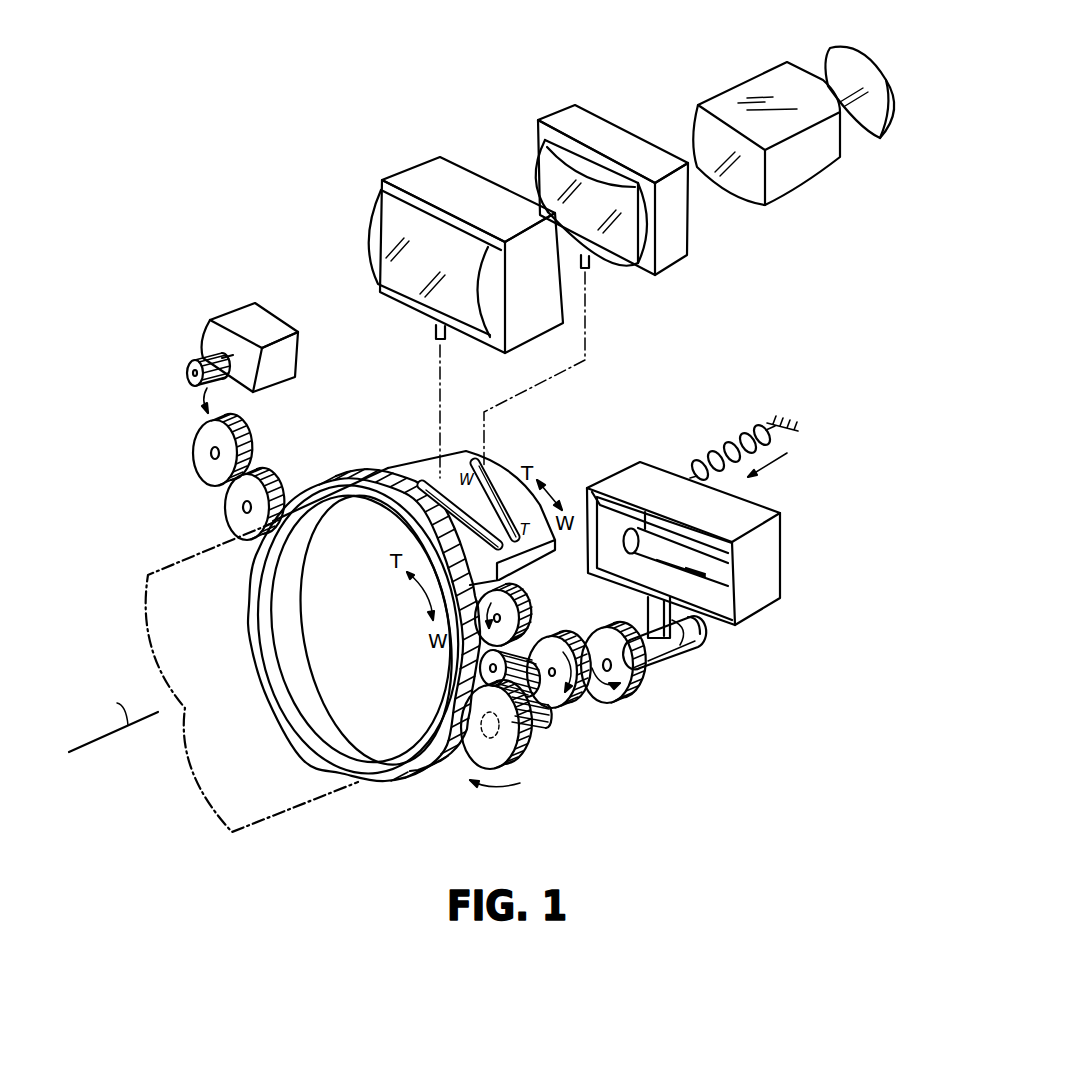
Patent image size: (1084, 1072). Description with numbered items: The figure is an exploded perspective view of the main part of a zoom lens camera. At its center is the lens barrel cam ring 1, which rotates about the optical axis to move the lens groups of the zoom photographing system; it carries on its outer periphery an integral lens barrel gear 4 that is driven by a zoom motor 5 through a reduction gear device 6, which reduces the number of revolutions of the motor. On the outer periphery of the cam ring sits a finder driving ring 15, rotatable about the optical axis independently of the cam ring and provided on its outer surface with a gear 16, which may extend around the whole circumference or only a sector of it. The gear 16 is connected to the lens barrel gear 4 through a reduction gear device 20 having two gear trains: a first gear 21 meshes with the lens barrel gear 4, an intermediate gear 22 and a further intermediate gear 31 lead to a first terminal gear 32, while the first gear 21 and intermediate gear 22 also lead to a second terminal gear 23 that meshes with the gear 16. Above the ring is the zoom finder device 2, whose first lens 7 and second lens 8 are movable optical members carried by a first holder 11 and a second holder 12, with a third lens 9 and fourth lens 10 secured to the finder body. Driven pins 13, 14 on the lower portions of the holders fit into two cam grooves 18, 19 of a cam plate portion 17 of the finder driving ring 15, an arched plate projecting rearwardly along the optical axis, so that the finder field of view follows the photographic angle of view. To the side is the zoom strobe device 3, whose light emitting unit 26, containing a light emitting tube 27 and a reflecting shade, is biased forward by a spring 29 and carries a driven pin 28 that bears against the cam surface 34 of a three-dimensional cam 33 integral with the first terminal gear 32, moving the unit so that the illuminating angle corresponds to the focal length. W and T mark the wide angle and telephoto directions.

The lens barrel cam ring 1 is at (192, 772).
The zoom finder device 2 is at (624, 75).
The zoom strobe device 3 is at (807, 570).
The lens barrel gear 4 is at (410, 770).
The zoom motor 5 is at (248, 318).
The reduction gear device 6 is at (277, 470).
The first lens 7 is at (375, 247).
The second lens 8 is at (548, 175).
The third lens 9 is at (757, 93).
The fourth lens 10 is at (882, 78).
The first holder 11 is at (443, 294).
The second holder 12 is at (586, 269).
The driven pin 13 is at (432, 338).
The driven pin 14 is at (593, 268).
The finder driving ring 15 is at (380, 475).
The gear 16 is at (452, 757).
The cam plate portion 17 is at (452, 463).
The cam groove 18 is at (422, 473).
The cam groove 19 is at (490, 475).
The reduction gear device 20 is at (563, 750).
The first gear 21 is at (510, 748).
The intermediate gear 22 is at (530, 627).
The second terminal gear 23 is at (505, 610).
The light emitting unit 26 is at (752, 512).
The light emitting tube 27 is at (658, 530).
The driven pin 28 is at (652, 609).
The spring 29 is at (739, 437).
The intermediate gear 31 is at (583, 697).
The first terminal gear 32 is at (627, 693).
The three-dimensional cam 33 is at (678, 651).
The cam surface 34 is at (703, 628).